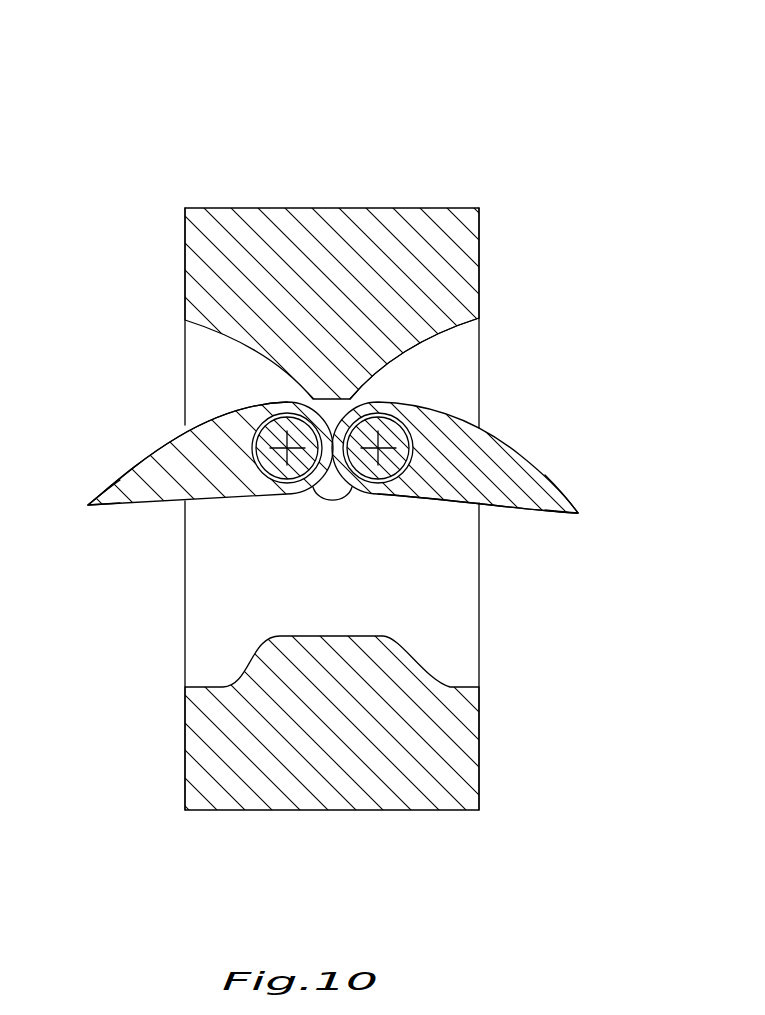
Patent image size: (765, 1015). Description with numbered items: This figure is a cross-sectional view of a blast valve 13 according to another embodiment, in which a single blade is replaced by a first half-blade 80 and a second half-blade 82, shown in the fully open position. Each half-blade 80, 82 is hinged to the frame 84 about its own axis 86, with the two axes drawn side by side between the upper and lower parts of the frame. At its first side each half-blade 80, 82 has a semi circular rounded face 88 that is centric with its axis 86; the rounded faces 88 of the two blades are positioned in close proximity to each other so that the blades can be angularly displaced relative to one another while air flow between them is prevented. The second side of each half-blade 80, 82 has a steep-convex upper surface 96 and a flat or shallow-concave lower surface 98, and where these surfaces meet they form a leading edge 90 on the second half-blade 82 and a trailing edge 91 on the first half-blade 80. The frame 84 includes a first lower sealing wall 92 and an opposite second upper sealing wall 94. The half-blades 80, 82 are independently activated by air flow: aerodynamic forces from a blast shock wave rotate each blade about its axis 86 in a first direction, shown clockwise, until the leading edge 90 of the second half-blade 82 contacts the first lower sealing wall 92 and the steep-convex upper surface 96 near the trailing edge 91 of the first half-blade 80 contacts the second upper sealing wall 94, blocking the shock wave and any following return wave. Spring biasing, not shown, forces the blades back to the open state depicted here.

The blast valve 13 is at (578, 60).
The frame 84 is at (330, 212).
The second upper sealing wall 94 is at (444, 329).
The first lower sealing wall 92 is at (278, 636).
The first half-blade 80 is at (163, 455).
The second half-blade 82 is at (520, 463).
The axis 86 is at (287, 449).
The semi circular rounded face 88 is at (322, 501).
The leading edge 90 is at (580, 512).
The trailing edge 91 is at (88, 505).
The steep-convex upper surface 96 is at (213, 416).
The lower surface 98 is at (472, 503).